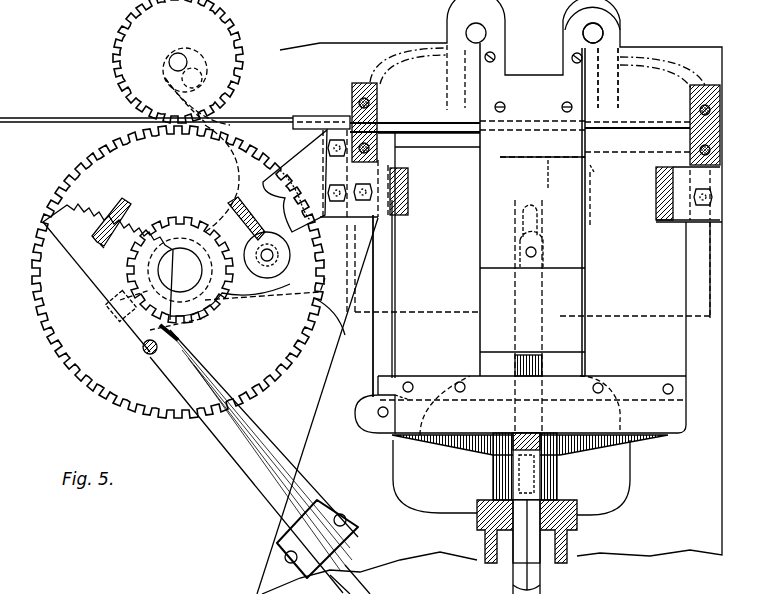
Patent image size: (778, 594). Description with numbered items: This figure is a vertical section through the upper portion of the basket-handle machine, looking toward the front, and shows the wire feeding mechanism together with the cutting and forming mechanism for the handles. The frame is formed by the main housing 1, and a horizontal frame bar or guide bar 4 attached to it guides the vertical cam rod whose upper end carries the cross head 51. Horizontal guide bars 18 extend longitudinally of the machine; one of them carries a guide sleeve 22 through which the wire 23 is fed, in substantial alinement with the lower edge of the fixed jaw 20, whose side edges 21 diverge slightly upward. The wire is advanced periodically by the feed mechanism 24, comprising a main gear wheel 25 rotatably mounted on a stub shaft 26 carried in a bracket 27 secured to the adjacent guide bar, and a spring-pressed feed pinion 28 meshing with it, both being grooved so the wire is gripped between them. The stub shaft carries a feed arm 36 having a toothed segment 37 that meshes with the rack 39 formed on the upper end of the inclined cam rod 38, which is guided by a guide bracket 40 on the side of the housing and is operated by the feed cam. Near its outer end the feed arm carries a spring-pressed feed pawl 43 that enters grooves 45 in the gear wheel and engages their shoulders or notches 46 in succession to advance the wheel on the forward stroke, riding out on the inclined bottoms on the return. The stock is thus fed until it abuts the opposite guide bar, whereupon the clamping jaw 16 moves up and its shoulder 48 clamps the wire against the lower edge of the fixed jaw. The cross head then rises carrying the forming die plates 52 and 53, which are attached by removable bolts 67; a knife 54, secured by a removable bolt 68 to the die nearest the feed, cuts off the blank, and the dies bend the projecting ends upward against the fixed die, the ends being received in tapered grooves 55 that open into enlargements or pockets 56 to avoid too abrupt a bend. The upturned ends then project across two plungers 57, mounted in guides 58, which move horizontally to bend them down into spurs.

The main housing 1 is at (706, 487).
The horizontal frame bar or guide bar 4 is at (578, 520).
The clamping jaw 16 is at (556, 265).
The guide bars 18 is at (365, 84).
The fixed jaw or fixed die 20 is at (528, 220).
The side edges 21 is at (602, 92).
The guide sleeve 22 is at (348, 122).
The wire 23 is at (262, 118).
The feed mechanism 24 is at (66, 180).
The main gear wheel 25 is at (255, 206).
The stub shaft 26 is at (190, 262).
The bracket 27 is at (120, 345).
The feed pinion 28 is at (218, 47).
The feed arm 36 is at (216, 300).
The segment 37 is at (182, 218).
The cam rod 38 is at (262, 440).
The rack 39 is at (105, 283).
The guide bracket 40 is at (350, 540).
The feed pawl 43 is at (275, 262).
The grooves 45 is at (108, 212).
The shoulders or notches 46 is at (130, 204).
The shoulder 48 is at (559, 178).
The cross head 51 is at (560, 470).
The forming die plate 52 is at (678, 327).
The forming die plate 53 is at (407, 306).
The knife 54 is at (395, 258).
The tapered grooves 55 is at (592, 200).
The enlargements or pockets 56 is at (596, 160).
The plungers 57 is at (597, 33).
The guides 58 is at (612, 32).
The bolts 67 is at (606, 386).
The removable bolt 68 is at (381, 420).